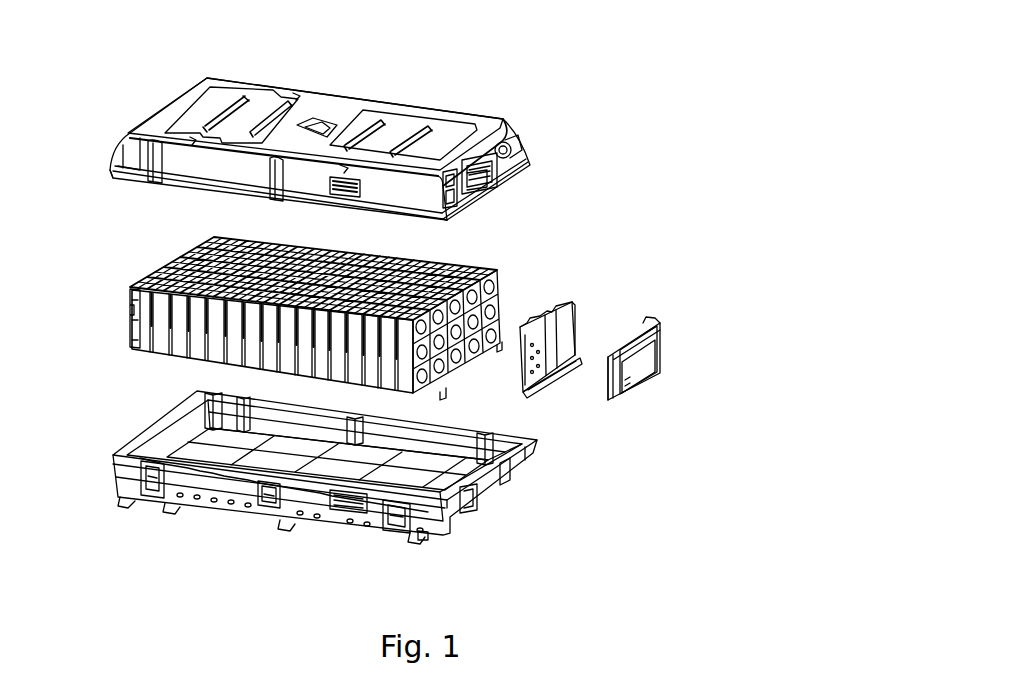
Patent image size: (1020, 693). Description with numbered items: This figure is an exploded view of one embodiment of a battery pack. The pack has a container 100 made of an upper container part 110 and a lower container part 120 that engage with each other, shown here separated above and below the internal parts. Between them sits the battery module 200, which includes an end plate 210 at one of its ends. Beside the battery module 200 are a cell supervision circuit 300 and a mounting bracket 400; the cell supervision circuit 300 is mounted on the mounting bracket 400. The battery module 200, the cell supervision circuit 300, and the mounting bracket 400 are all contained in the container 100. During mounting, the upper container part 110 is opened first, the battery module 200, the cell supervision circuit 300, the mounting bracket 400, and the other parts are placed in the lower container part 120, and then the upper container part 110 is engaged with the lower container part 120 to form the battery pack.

The container 100 is at (252, 70).
The upper container part 110 is at (447, 142).
The lower container part 120 is at (453, 515).
The battery module 200 is at (430, 253).
The end plate 210 is at (497, 270).
The cell supervision circuit 300 is at (660, 342).
The mounting bracket 400 is at (572, 300).